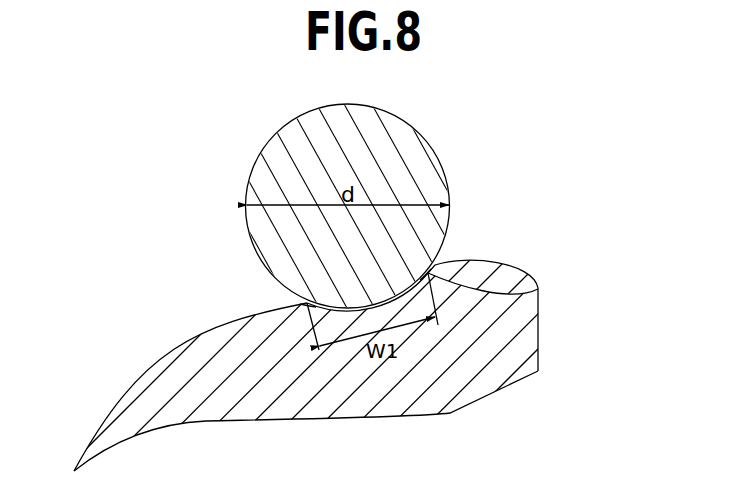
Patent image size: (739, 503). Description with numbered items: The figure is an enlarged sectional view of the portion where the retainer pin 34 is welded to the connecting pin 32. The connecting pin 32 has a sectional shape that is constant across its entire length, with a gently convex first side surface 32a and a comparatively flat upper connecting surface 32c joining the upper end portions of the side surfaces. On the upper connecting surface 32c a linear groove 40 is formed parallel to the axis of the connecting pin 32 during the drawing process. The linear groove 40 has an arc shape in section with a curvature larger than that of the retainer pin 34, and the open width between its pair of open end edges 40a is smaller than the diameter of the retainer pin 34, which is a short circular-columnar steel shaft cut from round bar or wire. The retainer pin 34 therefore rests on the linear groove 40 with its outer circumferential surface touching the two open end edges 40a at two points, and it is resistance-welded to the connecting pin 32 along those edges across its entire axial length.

The connecting pin 32 is at (126, 328).
The first side surface 32a is at (541, 342).
The upper connecting surface 32c is at (232, 316).
The retainer pin 34 is at (362, 126).
The linear groove 40 is at (446, 229).
The open end edges 40a is at (306, 300).